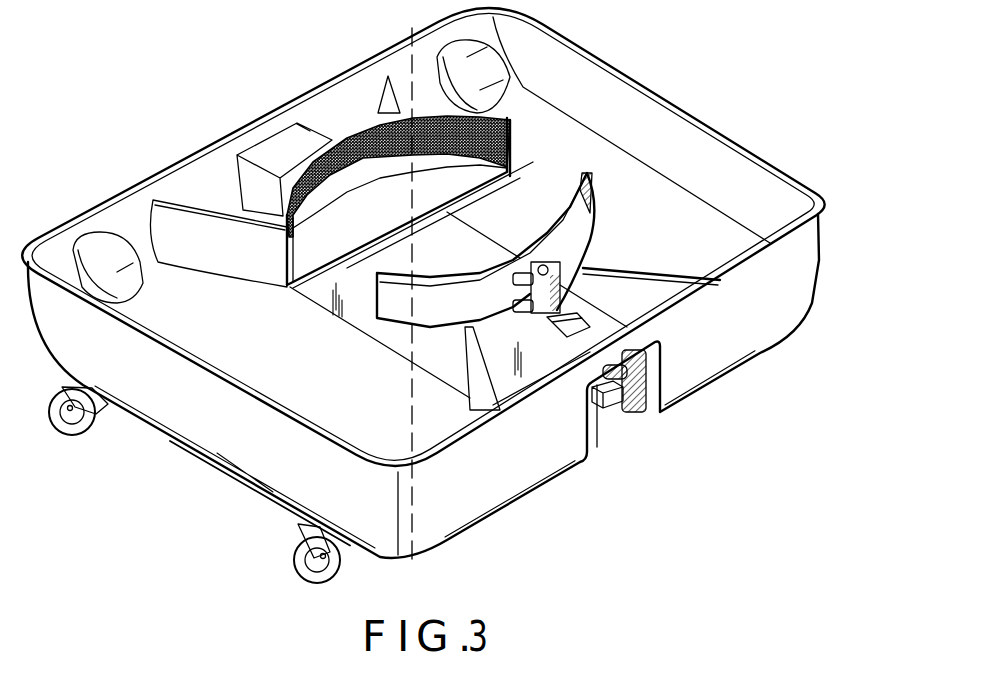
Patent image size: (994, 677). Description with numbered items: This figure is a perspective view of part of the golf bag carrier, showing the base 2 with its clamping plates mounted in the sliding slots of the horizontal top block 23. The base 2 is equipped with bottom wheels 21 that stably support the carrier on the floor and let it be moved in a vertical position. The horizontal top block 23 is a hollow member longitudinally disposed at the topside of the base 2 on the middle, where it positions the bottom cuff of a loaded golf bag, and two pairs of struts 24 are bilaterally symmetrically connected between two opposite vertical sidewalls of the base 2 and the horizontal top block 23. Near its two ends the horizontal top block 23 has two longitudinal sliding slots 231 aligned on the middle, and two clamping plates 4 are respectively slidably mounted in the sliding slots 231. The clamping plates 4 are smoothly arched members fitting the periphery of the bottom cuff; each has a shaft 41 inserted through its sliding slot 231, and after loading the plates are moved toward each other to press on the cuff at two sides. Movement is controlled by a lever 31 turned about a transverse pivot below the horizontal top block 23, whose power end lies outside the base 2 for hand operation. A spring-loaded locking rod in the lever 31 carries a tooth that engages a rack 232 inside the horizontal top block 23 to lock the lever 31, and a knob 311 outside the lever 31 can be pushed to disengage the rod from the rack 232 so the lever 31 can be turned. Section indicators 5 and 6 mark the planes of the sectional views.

The base 2 is at (348, 64).
The bottom wheels 21 is at (80, 421).
The horizontal top block 23 is at (270, 153).
The struts 24 is at (190, 227).
The clamping plates 4 is at (562, 204).
The shaft 41 is at (550, 293).
The longitudinal sliding slots 231 is at (603, 325).
The rack 232 is at (645, 412).
The lever 31 is at (598, 404).
The knob 311 is at (620, 378).
The section line V-V 5 is at (691, 318).
The section line VI-VI 6 is at (627, 249).